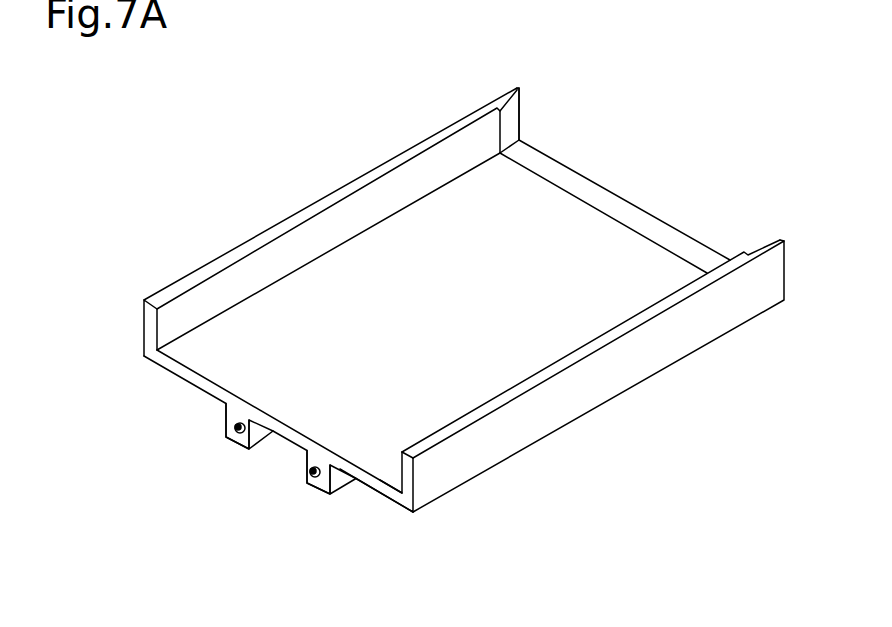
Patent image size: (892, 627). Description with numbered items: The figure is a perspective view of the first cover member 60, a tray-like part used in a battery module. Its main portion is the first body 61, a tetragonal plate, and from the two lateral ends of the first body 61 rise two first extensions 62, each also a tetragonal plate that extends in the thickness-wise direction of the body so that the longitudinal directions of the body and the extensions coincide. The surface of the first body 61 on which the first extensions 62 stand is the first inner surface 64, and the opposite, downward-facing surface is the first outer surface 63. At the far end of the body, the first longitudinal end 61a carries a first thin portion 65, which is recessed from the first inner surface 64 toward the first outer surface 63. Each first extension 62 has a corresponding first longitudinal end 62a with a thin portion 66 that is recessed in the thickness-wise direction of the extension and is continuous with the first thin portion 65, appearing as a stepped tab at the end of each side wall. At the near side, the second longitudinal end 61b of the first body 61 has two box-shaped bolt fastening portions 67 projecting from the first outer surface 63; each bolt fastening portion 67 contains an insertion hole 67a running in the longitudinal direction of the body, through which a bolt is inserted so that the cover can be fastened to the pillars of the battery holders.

The first cover member 60 is at (311, 138).
The first body 61 is at (483, 390).
The first longitudinal end 61a is at (645, 210).
The second longitudinal end 61b is at (166, 366).
The first extensions 62 is at (300, 240).
The first longitudinal end 62a is at (527, 118).
The first outer surface 63 is at (370, 491).
The first inner surface 64 is at (386, 468).
The first thin portion 65 is at (553, 171).
The thin portion 66 is at (509, 110).
The bolt fastening portions 67 is at (226, 417).
The insertion hole 67a is at (234, 436).